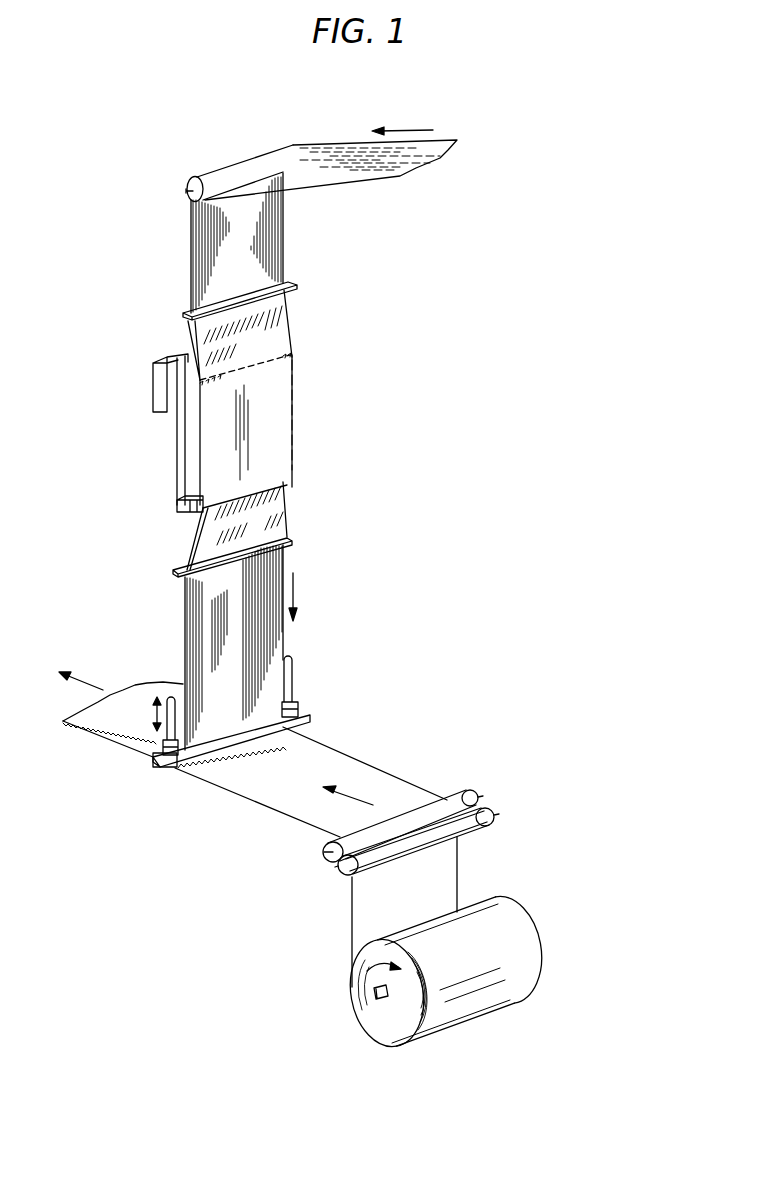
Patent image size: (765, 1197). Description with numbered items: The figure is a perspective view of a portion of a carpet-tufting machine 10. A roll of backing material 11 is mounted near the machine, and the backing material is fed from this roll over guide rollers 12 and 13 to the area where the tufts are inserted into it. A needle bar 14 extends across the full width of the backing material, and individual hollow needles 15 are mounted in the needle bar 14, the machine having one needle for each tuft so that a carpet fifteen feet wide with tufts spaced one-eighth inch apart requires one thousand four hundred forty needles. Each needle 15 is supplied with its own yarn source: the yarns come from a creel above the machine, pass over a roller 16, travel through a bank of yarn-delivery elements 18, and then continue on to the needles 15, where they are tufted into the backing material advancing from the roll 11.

The carpet-tufting machine 10 is at (305, 139).
The roll of backing material 11 is at (515, 935).
The guide roller 12 is at (483, 823).
The guide roller 13 is at (465, 793).
The needle bar 14 is at (157, 762).
The hollow needles 15 is at (197, 767).
The roller 16 is at (207, 201).
The bank of yarn-delivery elements 18 is at (290, 394).